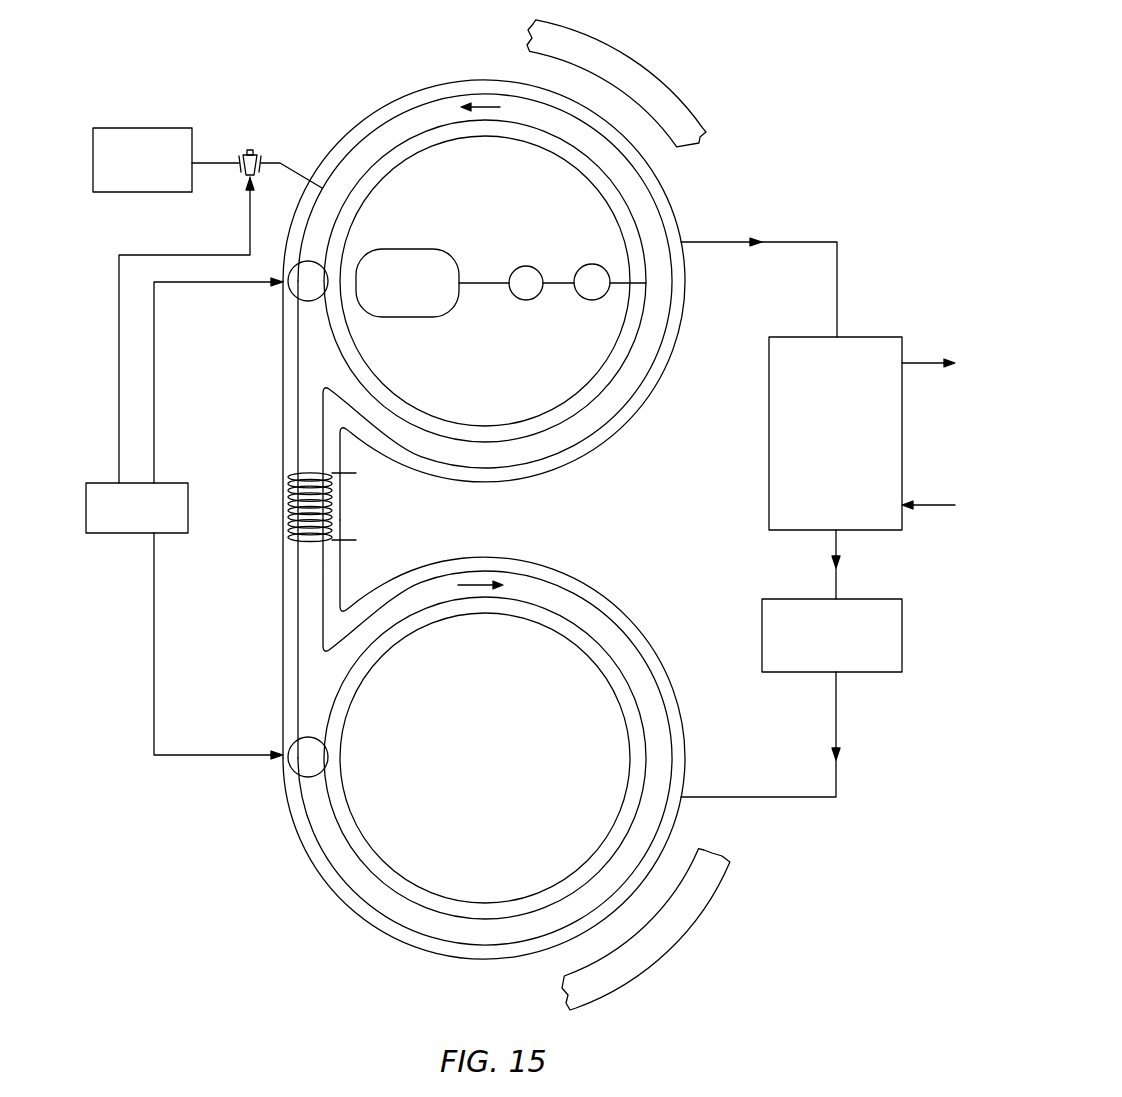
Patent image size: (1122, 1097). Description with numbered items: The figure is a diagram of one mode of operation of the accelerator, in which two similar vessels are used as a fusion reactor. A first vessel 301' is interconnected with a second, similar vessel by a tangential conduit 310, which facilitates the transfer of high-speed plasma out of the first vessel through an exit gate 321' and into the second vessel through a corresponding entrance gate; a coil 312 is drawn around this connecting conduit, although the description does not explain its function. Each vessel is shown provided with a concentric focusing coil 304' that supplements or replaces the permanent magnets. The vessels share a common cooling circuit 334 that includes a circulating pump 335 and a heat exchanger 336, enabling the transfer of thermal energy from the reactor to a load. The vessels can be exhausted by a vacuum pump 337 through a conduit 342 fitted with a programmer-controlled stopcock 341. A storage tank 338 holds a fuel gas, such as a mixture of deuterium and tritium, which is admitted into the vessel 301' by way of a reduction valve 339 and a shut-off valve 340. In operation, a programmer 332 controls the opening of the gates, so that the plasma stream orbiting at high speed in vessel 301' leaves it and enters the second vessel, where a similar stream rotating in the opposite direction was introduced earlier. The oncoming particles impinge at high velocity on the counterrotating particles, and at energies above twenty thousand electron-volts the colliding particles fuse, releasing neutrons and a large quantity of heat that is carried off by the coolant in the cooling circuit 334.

The vessel 301' is at (484, 300).
The focusing coil 304' is at (647, 83).
The tangential conduit 310 is at (298, 598).
The heating coil 312 is at (287, 507).
The exit gate 321' is at (355, 308).
The programmer 332 is at (86, 492).
The cooling circuit 334 is at (792, 240).
The circulating pump 335 is at (885, 672).
The heat exchanger 336 is at (769, 397).
The vacuum pump 337 is at (113, 128).
The storage tank 338 is at (405, 250).
The reduction valve 339 is at (527, 300).
The shut-off valve 340 is at (590, 264).
The stopcock 341 is at (247, 150).
The conduit 342 is at (295, 162).